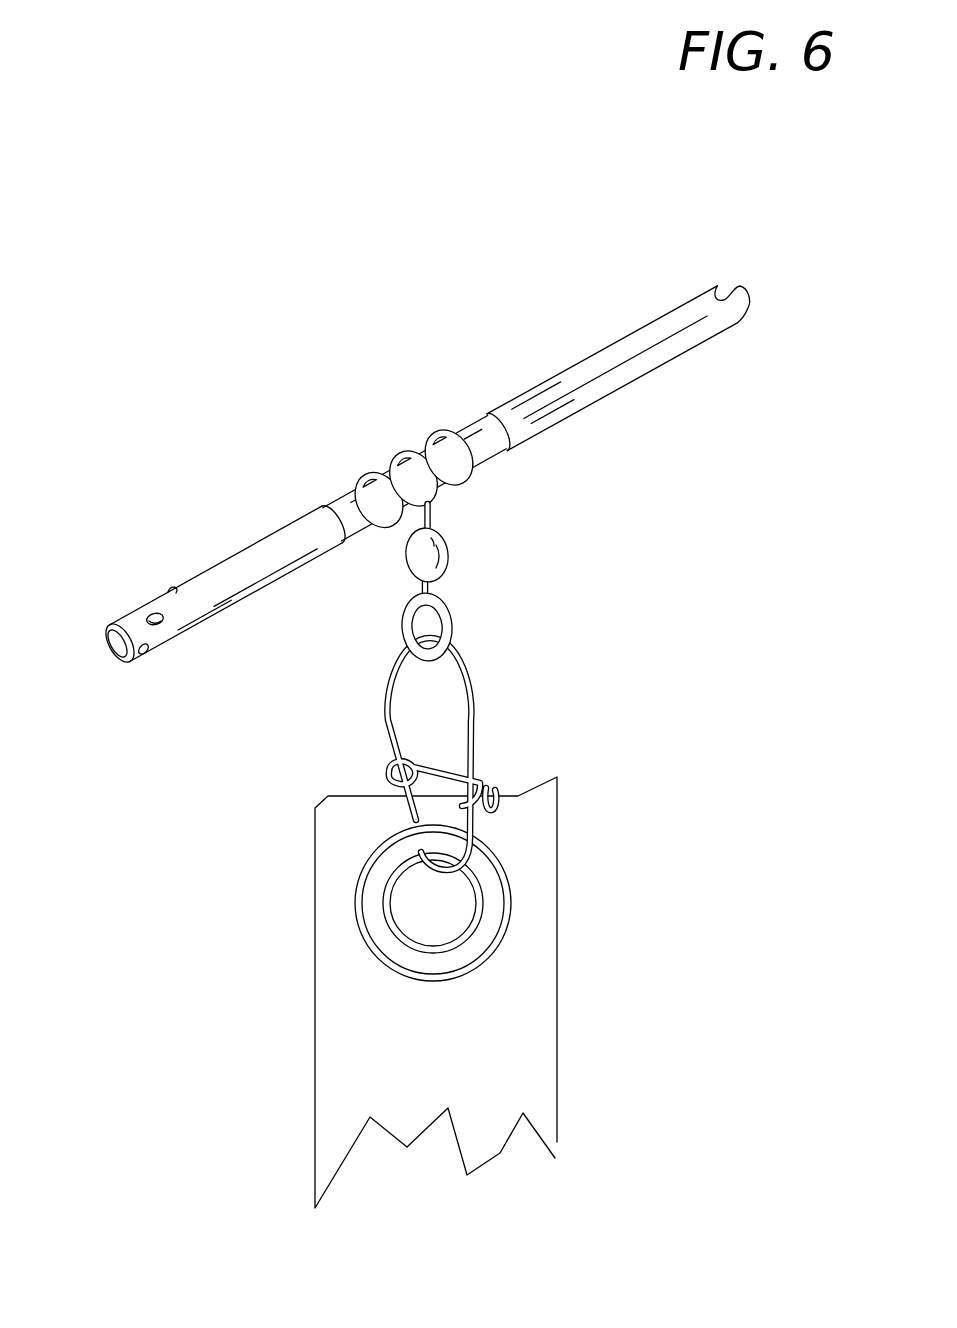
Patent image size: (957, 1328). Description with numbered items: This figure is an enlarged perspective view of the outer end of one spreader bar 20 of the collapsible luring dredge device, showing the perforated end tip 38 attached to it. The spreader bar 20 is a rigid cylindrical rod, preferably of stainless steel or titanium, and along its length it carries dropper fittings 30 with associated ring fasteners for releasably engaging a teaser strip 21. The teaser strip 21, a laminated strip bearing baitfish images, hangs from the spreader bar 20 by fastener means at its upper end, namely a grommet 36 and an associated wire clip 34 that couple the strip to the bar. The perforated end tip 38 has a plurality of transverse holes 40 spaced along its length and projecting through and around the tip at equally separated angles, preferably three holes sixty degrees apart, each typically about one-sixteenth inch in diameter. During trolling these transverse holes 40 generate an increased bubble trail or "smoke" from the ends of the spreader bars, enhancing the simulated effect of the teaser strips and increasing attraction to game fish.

The spreader bar 20 is at (398, 434).
The teaser strip 21 is at (557, 867).
The dropper fitting 30 is at (438, 432).
The wire clip 34 is at (473, 727).
The grommet 36 is at (358, 888).
The perforated end tip 38 is at (217, 563).
The transverse hole 40 is at (158, 615).